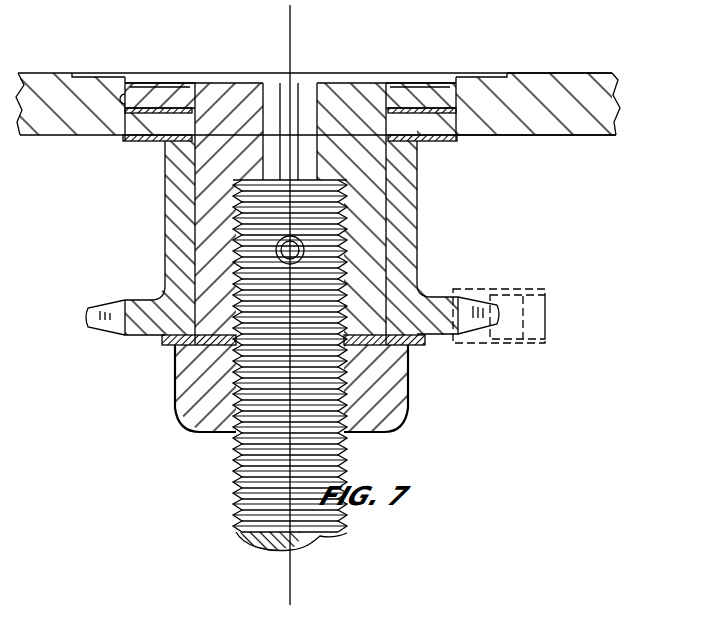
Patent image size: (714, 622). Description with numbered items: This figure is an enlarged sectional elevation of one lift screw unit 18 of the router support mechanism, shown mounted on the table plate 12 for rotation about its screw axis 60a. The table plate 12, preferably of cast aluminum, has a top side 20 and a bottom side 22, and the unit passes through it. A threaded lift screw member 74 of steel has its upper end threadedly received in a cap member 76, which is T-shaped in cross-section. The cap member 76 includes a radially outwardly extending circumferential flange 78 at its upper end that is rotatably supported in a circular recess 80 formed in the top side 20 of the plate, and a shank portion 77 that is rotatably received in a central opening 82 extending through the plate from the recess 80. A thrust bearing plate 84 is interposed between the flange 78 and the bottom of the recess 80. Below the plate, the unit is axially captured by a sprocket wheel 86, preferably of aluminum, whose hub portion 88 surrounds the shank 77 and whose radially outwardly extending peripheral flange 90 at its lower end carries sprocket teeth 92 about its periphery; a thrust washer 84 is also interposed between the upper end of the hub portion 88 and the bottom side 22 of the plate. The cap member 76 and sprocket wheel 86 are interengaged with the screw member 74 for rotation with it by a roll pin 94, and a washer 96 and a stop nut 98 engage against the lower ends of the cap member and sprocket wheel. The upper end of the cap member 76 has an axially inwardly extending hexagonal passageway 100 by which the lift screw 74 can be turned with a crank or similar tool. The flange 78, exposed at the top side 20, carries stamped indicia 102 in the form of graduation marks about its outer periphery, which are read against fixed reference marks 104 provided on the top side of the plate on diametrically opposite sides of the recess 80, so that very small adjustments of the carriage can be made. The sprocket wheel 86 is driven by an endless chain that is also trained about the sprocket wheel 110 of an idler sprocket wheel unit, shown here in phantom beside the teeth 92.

The table plate 12 is at (582, 63).
The lift screw unit 18 is at (220, 479).
The top side 20 is at (555, 73).
The bottom side 22 is at (588, 137).
The screw axis 60a is at (284, 567).
The threaded lift screw member 74 is at (349, 486).
The cap member 76 is at (402, 282).
The shank portion 77 is at (372, 250).
The circumferential flange 78 is at (390, 87).
The circular recess 80 is at (126, 110).
The central opening 82 is at (200, 96).
The thrust bearing plate 84 is at (427, 109).
The sprocket wheel 86 is at (148, 177).
The hub portion 88 is at (165, 212).
The peripheral flange 90 is at (148, 299).
The sprocket teeth 92 is at (108, 336).
The roll pin 94 is at (307, 244).
The washer 96 is at (168, 346).
The stop nut 98 is at (174, 410).
The hexagonal passageway 100 is at (287, 85).
The indicia 102 is at (143, 83).
The fixed reference marks 104 is at (80, 73).
The sprocket wheel 110 is at (553, 315).